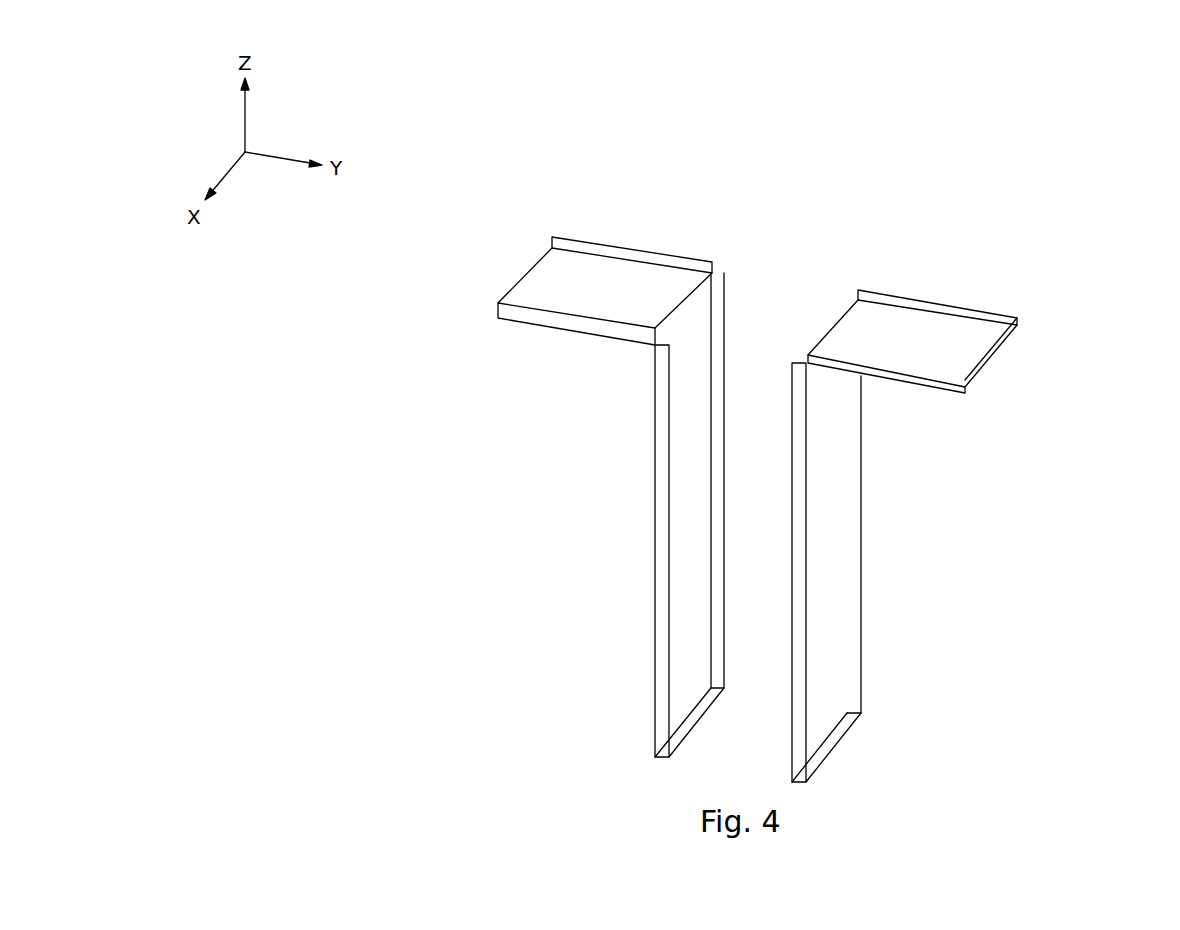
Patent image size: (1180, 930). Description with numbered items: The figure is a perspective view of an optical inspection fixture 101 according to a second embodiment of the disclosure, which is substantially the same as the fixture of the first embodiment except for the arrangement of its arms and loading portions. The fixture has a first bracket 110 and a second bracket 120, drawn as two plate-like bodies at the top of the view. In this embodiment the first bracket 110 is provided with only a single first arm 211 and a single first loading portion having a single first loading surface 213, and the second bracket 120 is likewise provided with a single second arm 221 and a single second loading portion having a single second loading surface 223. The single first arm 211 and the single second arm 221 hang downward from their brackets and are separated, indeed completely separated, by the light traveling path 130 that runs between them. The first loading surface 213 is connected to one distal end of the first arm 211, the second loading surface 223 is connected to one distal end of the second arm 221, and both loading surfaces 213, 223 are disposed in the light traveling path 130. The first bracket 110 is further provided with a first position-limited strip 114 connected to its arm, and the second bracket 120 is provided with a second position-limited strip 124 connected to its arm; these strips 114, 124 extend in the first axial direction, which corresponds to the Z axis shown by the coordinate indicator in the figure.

The optical inspection fixture 101 is at (413, 70).
The first bracket 110 is at (563, 237).
The first position-limited strip 114 is at (663, 403).
The second bracket 120 is at (1003, 312).
The second position-limited strip 124 is at (847, 301).
The light traveling path 130 is at (788, 285).
The first arm 211 is at (687, 472).
The first loading surface 213 is at (680, 730).
The second arm 221 is at (838, 530).
The second loading surface 223 is at (830, 745).